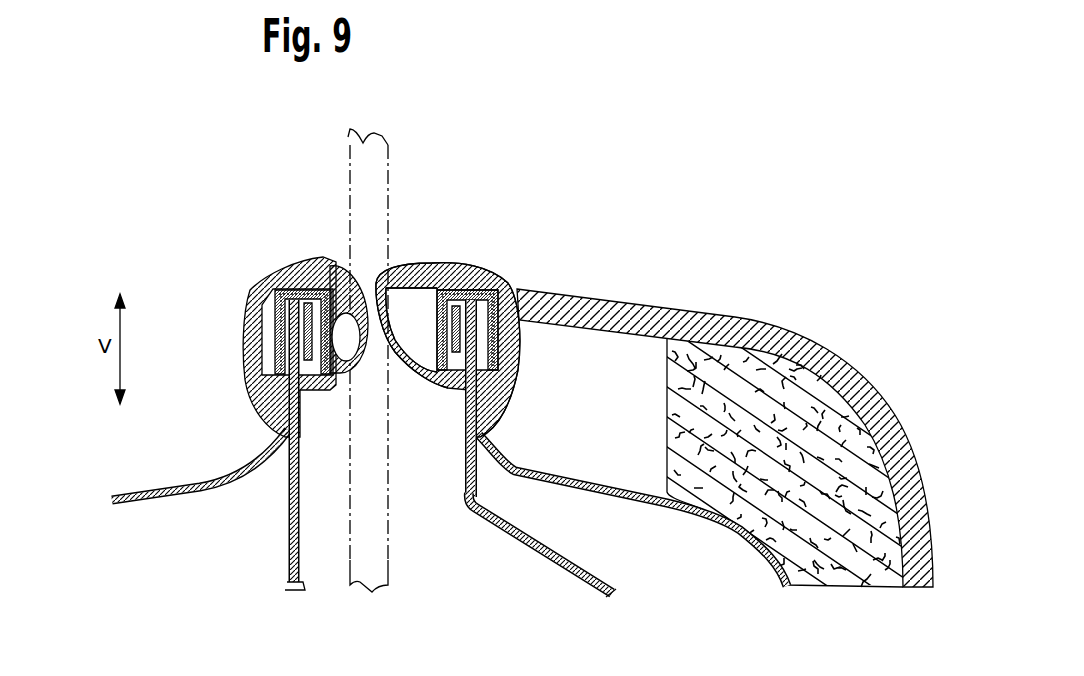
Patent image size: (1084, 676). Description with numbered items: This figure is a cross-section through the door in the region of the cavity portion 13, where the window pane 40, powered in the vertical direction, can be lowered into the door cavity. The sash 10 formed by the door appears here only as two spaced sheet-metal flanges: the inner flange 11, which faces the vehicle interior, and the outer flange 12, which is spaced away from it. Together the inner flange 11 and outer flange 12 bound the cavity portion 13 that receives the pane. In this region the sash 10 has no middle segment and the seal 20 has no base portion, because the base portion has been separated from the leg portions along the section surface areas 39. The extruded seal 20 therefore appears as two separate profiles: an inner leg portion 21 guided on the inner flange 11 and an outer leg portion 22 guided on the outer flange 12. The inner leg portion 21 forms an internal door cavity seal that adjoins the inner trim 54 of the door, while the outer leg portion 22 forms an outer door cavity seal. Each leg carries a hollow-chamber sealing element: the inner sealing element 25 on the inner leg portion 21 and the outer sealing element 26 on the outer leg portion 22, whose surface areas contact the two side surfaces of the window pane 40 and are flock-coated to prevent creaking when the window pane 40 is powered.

The sash 10 is at (193, 494).
The inner flange 11 is at (514, 368).
The outer flange 12 is at (265, 373).
The cavity portion 13 is at (435, 496).
The seal 20 is at (508, 272).
The inner leg portion 21 is at (462, 265).
The outer leg portion 22 is at (270, 285).
The inner sealing element 25 is at (419, 278).
The outer sealing element 26 is at (340, 280).
The section surface areas 39 is at (326, 388).
The window pane 40 is at (389, 146).
The inner trim 54 is at (762, 322).